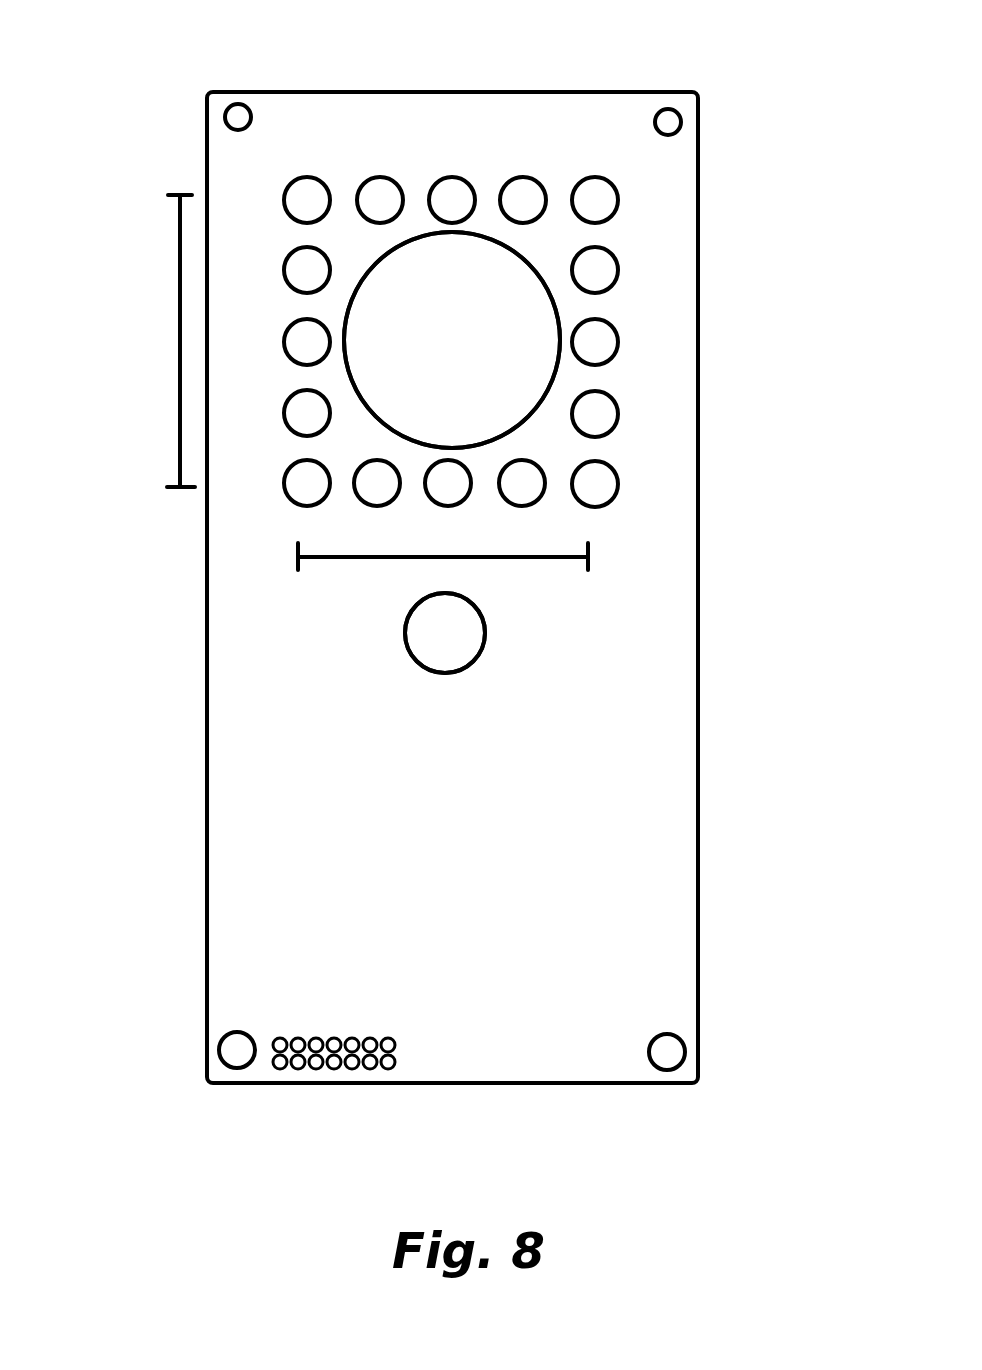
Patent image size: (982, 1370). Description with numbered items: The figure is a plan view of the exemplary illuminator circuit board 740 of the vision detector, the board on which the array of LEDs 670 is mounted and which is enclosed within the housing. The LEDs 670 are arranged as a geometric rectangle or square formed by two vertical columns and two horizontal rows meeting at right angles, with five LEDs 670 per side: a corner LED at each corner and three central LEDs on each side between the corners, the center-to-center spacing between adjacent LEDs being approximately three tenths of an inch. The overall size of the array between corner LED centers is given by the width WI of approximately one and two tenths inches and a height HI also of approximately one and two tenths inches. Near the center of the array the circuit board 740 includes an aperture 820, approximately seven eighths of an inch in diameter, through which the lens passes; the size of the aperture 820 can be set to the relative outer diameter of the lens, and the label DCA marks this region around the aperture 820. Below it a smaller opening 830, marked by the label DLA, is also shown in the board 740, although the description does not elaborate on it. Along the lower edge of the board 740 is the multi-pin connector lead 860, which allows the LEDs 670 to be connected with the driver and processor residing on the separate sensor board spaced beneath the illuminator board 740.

The LED 670 is at (285, 332).
The circuit board 740 is at (495, 1012).
The aperture 820 is at (560, 372).
The light source aperture 830 is at (420, 650).
The multi-pin connector lead 860 is at (267, 1075).
The detector clear aperture DCA is at (582, 304).
The light source clear aperture DLA is at (476, 694).
The height HI is at (178, 337).
The width WI is at (520, 558).